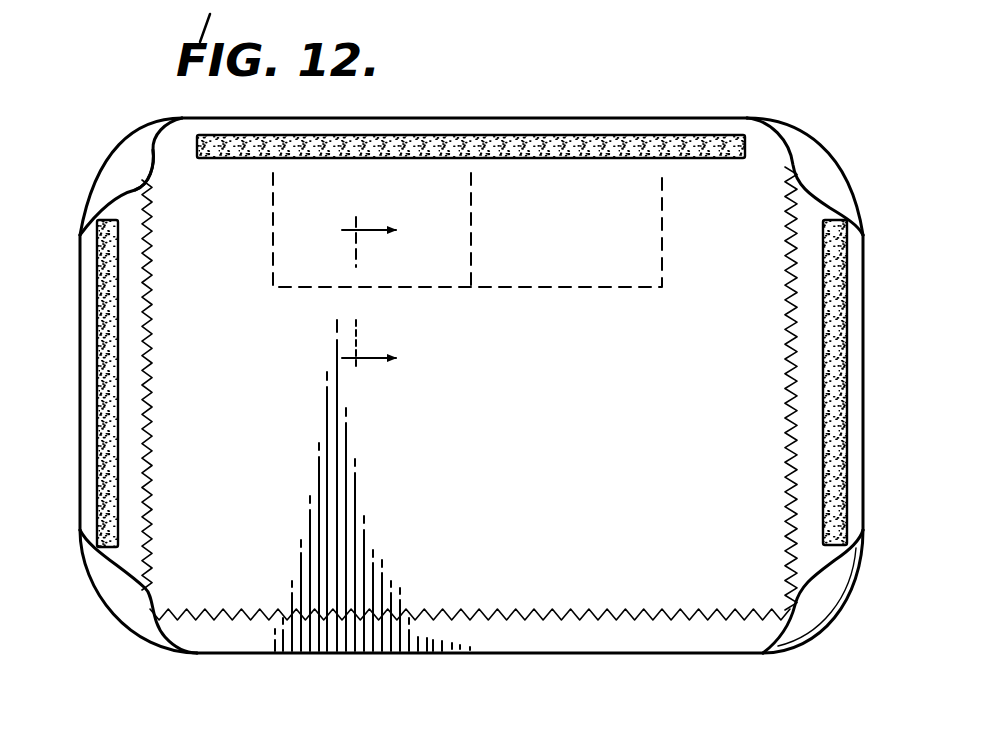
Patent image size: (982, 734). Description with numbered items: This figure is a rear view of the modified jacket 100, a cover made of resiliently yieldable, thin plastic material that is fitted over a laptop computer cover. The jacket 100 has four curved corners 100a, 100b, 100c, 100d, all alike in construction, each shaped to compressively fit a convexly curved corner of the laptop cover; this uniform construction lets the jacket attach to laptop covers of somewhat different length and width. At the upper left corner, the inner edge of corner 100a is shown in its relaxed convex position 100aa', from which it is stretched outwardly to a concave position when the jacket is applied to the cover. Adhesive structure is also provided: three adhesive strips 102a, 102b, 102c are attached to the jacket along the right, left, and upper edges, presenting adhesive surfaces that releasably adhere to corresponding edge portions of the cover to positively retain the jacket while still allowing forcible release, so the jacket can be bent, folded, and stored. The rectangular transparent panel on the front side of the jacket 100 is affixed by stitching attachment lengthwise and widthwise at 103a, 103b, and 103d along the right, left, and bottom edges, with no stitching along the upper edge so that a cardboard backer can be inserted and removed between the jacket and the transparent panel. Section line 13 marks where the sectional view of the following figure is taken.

The jacket 100 is at (530, 470).
The curved corner 100a is at (110, 150).
The curved corner 100b is at (832, 147).
The curved corner 100c is at (100, 613).
The curved corner 100d is at (833, 617).
The relaxed convex position of inner edge 100aa' is at (200, 191).
The adhesive strip 102a is at (832, 272).
The adhesive strip 102b is at (107, 493).
The adhesive strip 102c is at (567, 147).
The stitching attachment 103a is at (787, 356).
The stitching attachment 103b is at (148, 427).
The stitching attachment 103d is at (603, 622).
The section line for FIG. 13 is at (467, 274).